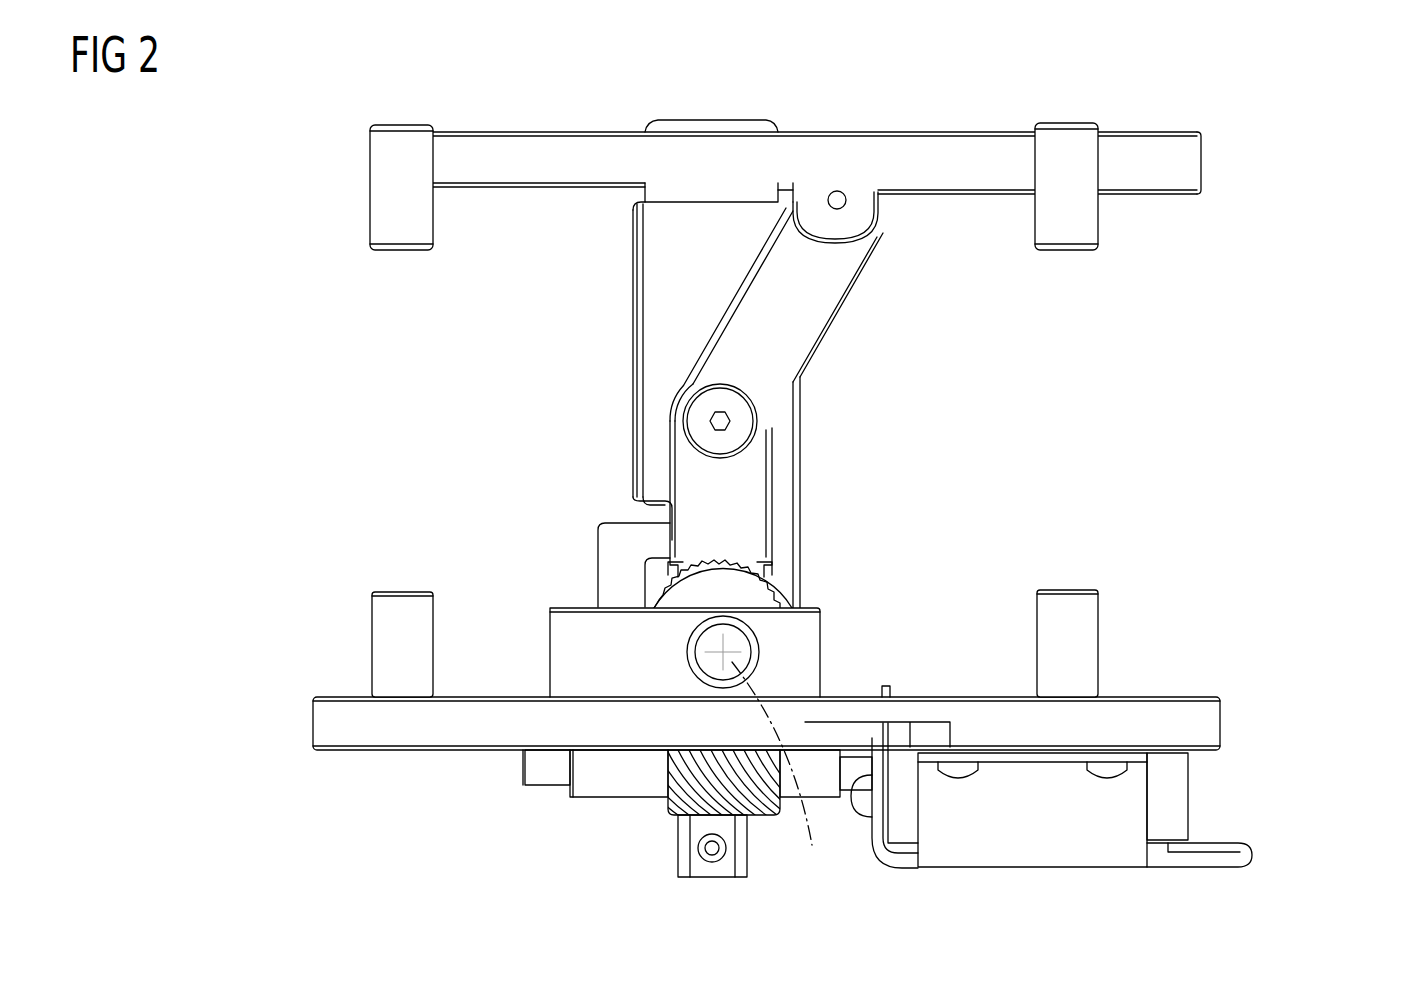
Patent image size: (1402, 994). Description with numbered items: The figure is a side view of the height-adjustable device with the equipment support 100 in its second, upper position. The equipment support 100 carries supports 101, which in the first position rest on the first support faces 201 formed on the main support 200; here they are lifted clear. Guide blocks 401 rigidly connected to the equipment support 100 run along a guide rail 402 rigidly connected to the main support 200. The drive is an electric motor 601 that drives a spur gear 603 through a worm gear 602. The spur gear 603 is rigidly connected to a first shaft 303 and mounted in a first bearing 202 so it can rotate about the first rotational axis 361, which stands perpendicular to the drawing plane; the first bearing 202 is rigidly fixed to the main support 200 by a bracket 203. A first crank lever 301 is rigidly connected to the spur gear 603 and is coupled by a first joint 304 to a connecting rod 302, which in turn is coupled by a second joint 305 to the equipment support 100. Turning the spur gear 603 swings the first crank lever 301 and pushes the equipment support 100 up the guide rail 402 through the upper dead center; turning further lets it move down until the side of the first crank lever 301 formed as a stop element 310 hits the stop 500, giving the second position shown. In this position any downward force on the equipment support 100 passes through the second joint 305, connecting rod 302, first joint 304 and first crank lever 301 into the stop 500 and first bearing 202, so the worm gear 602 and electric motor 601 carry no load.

The equipment support 100 is at (937, 155).
The support 101 is at (1075, 250).
The main support 200 is at (1200, 727).
The first support face 201 is at (1077, 588).
The first bearing 202 is at (700, 667).
The bracket 203 is at (577, 635).
The first crank lever 301 is at (740, 517).
The connecting rod 302 is at (793, 313).
The first shaft 303 is at (693, 643).
The first joint 304 is at (738, 425).
The second joint 305 is at (847, 203).
The stop element 310 is at (688, 532).
The first rotational axis 361 is at (789, 768).
The guide block 401 is at (683, 273).
The guide rail 402 is at (686, 857).
The stop 500 is at (690, 528).
The electric motor 601 is at (1290, 767).
The worm gear 602 is at (700, 800).
The spur gear 603 is at (702, 595).